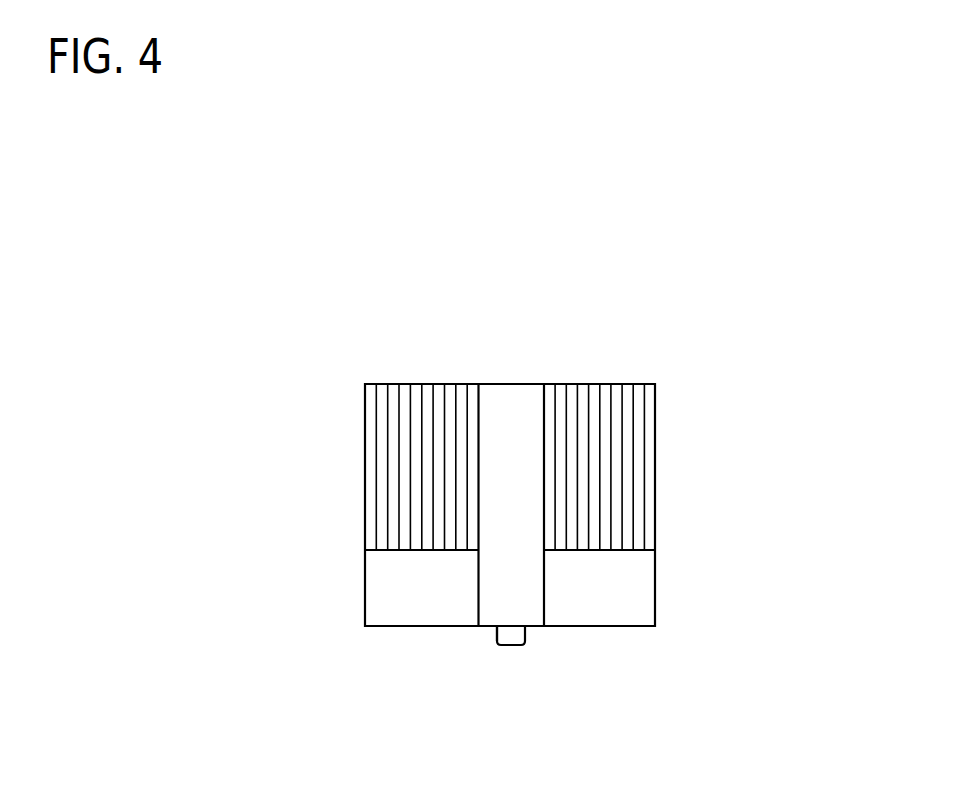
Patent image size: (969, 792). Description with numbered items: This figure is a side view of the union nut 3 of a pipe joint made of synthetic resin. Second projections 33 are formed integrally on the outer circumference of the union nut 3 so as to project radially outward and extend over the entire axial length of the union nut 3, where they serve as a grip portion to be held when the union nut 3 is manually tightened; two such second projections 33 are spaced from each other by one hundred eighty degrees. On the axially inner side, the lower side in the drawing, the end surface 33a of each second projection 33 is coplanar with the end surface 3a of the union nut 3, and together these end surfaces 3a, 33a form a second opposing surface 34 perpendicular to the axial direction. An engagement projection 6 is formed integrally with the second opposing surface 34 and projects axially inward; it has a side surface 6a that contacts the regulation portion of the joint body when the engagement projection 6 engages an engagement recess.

The union nut 3 is at (612, 370).
The second projection 33 is at (525, 478).
The end surface of the union nut 3a is at (380, 627).
The end surface of the second projection 33a is at (484, 627).
The second opposing surface 34 is at (450, 707).
The engagement projection 6 is at (515, 647).
The side surface 6a is at (497, 631).